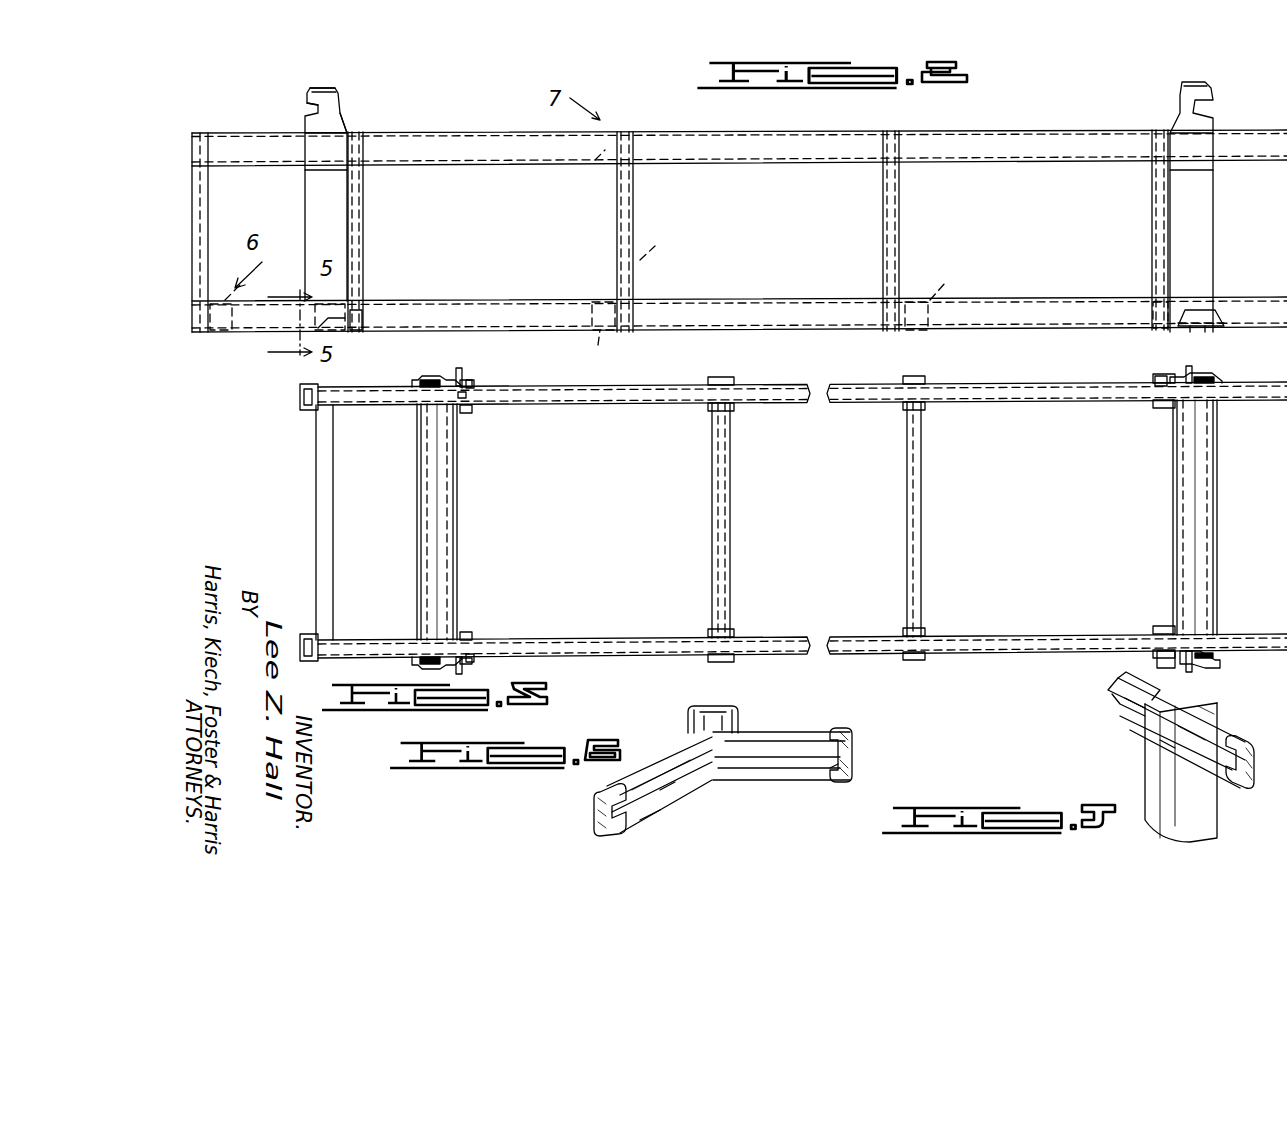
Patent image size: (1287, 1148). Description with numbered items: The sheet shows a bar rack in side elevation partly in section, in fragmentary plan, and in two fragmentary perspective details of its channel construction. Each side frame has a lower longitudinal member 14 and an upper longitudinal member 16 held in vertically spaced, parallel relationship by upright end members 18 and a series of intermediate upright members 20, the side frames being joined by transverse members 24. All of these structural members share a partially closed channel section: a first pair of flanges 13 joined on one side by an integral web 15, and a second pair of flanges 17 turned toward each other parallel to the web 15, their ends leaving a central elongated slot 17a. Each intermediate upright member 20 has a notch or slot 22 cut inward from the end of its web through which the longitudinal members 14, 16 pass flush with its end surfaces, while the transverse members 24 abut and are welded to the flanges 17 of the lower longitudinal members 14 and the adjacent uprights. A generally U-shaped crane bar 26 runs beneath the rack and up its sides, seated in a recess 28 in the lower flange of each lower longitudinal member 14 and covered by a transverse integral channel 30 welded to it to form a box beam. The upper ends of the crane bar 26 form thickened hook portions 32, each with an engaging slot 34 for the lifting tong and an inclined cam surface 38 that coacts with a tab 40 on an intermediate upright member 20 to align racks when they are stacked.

In FIG. 6, the first pair of flanges 13 is at (638, 768).
In FIG. 7, the first pair of flanges 13 is at (1120, 712).
In FIG. 2, the lower longitudinal member 14 is at (752, 300).
In FIG. 3, the lower longitudinal member 14 is at (802, 646).
In FIG. 6, the lower longitudinal member 14 is at (680, 808).
In FIG. 6, the integral web 15 is at (712, 718).
In FIG. 7, the integral web 15 is at (1202, 828).
In FIG. 2, the upper longitudinal member 16 is at (786, 157).
In FIG. 3, the upper longitudinal member 16 is at (608, 396).
In FIG. 7, the upper longitudinal member 16 is at (1256, 724).
In FIG. 6, the second pair of flanges 17 is at (646, 814).
In FIG. 7, the second pair of flanges 17 is at (1128, 690).
In FIG. 6, the elongated slot 17a is at (662, 778).
In FIG. 7, the elongated slot 17a is at (1160, 762).
In FIG. 2, the upright end member 18 is at (200, 222).
In FIG. 3, the upright end member 18 is at (300, 402).
In FIG. 6, the upright end member 18 is at (740, 728).
In FIG. 2, the intermediate upright member 20 is at (356, 224).
In FIG. 3, the intermediate upright member 20 is at (470, 426).
In FIG. 7, the intermediate upright member 20 is at (1206, 822).
In FIG. 2, the notch or slot 22 is at (595, 162).
In FIG. 3, the notch or slot 22 is at (466, 630).
In FIG. 7, the notch or slot 22 is at (1162, 740).
In FIG. 2, the transverse member 24 is at (756, 304).
In FIG. 3, the transverse member 24 is at (335, 508).
In FIG. 6, the transverse member 24 is at (800, 742).
In FIG. 2, the crane bar 26 is at (300, 196).
In FIG. 3, the crane bar 26 is at (420, 536).
In FIG. 2, the recess or indentation 28 is at (296, 350).
In FIG. 2, the transverse integral channel 30 is at (352, 336).
In FIG. 3, the transverse integral channel 30 is at (442, 530).
In FIG. 2, the hook portion 32 is at (345, 118).
In FIG. 3, the hook portion 32 is at (448, 372).
In FIG. 2, the engaging slot 34 is at (302, 112).
In FIG. 3, the engaging slot 34 is at (425, 400).
In FIG. 2, the cam surface 38 is at (345, 118).
In FIG. 3, the cam surface 38 is at (462, 376).
In FIG. 2, the tab 40 is at (355, 315).
In FIG. 3, the tab 40 is at (1155, 384).